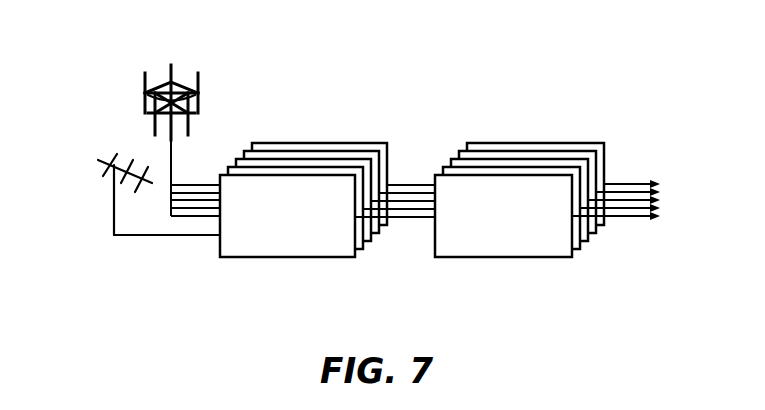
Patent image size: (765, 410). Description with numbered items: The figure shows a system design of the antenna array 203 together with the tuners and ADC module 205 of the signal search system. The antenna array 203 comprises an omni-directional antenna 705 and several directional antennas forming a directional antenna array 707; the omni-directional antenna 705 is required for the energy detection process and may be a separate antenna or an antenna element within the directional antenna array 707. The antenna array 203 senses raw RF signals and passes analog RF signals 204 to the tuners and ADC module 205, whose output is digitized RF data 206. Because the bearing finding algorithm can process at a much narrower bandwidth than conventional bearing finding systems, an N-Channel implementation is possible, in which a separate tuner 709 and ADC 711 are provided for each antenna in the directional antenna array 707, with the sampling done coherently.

The antenna array 203 is at (108, 97).
The analog RF signals 204 is at (193, 270).
The tuners and ADC module 205 is at (460, 77).
The digitized RF data 206 is at (627, 268).
The omni-directional antenna 705 is at (114, 213).
The directional antenna array 707 is at (183, 88).
The tuner 709 is at (290, 257).
The ADC 711 is at (505, 257).